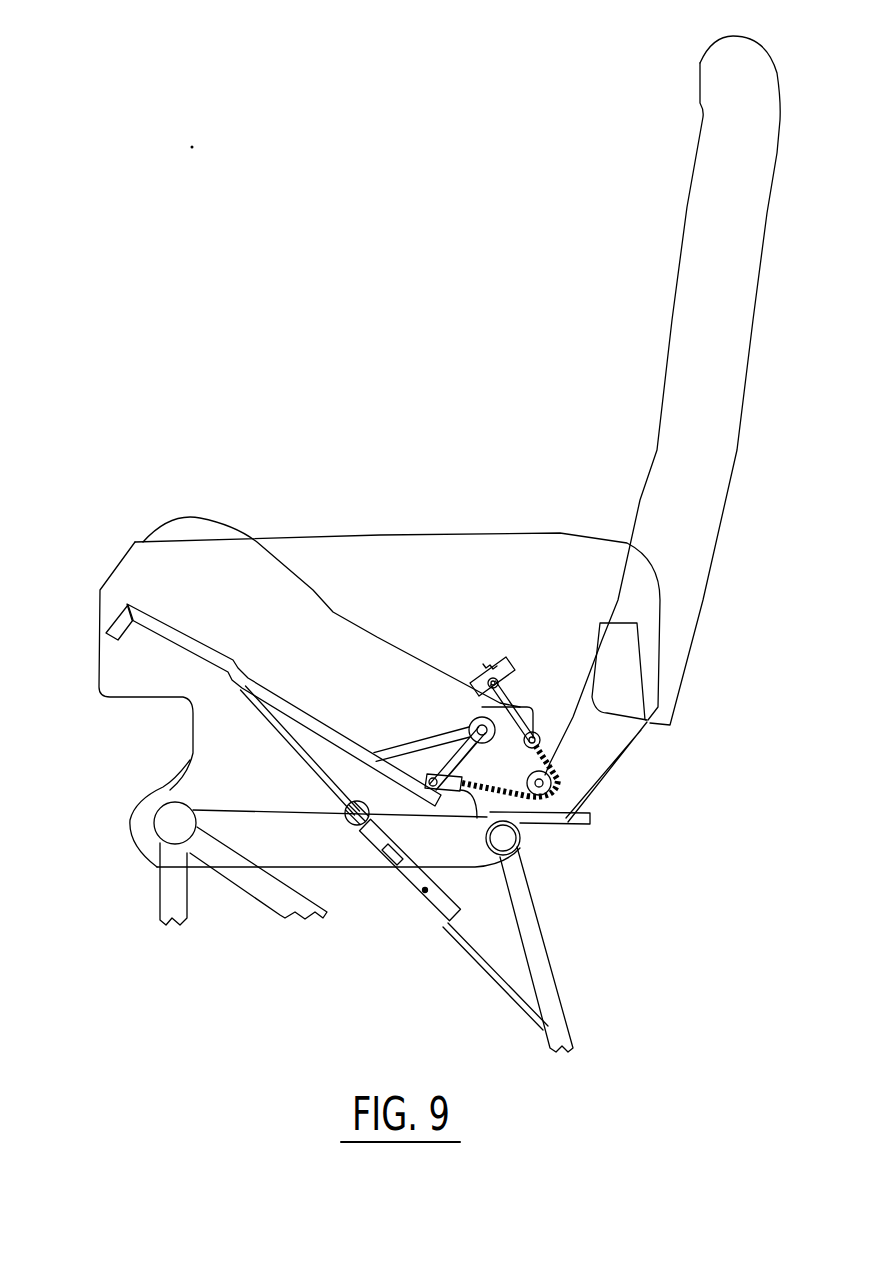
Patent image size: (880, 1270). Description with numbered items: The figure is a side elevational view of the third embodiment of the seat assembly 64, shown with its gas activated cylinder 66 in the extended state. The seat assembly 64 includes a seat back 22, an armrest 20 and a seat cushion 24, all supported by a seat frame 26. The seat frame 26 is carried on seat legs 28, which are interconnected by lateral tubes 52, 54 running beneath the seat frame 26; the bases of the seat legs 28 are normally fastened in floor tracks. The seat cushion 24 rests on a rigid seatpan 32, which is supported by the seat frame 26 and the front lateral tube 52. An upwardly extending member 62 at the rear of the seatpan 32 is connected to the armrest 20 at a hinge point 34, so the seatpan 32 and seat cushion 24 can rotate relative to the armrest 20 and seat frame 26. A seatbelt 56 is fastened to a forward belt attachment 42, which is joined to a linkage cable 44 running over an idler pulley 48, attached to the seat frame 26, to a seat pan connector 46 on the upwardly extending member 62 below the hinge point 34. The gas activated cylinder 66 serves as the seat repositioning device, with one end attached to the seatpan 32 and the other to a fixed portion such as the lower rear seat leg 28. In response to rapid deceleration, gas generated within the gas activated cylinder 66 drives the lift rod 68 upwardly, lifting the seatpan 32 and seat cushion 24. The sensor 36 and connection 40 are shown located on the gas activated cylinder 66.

The armrest 20 is at (392, 537).
The seat back 22 is at (690, 260).
The seat cushion 24 is at (178, 567).
The seat frame 26 is at (450, 855).
The seat legs 28 is at (547, 933).
The seatpan 32 is at (110, 620).
The hinge point 34 is at (477, 713).
The sensor 36 is at (385, 853).
The connection 40 is at (420, 890).
The forward belt attachment 42 is at (535, 735).
The linkage cable 44 is at (560, 765).
The seat pan connector 46 is at (430, 803).
The idler pulley 48 is at (560, 787).
The front lateral tube 52 is at (130, 818).
The lateral tube 54 is at (537, 837).
The seatbelt 56 is at (500, 672).
The upwardly extending member 62 is at (418, 752).
The seat assembly 64 is at (512, 400).
The gas activated cylinder 66 is at (440, 913).
The lift rod 68 is at (287, 740).